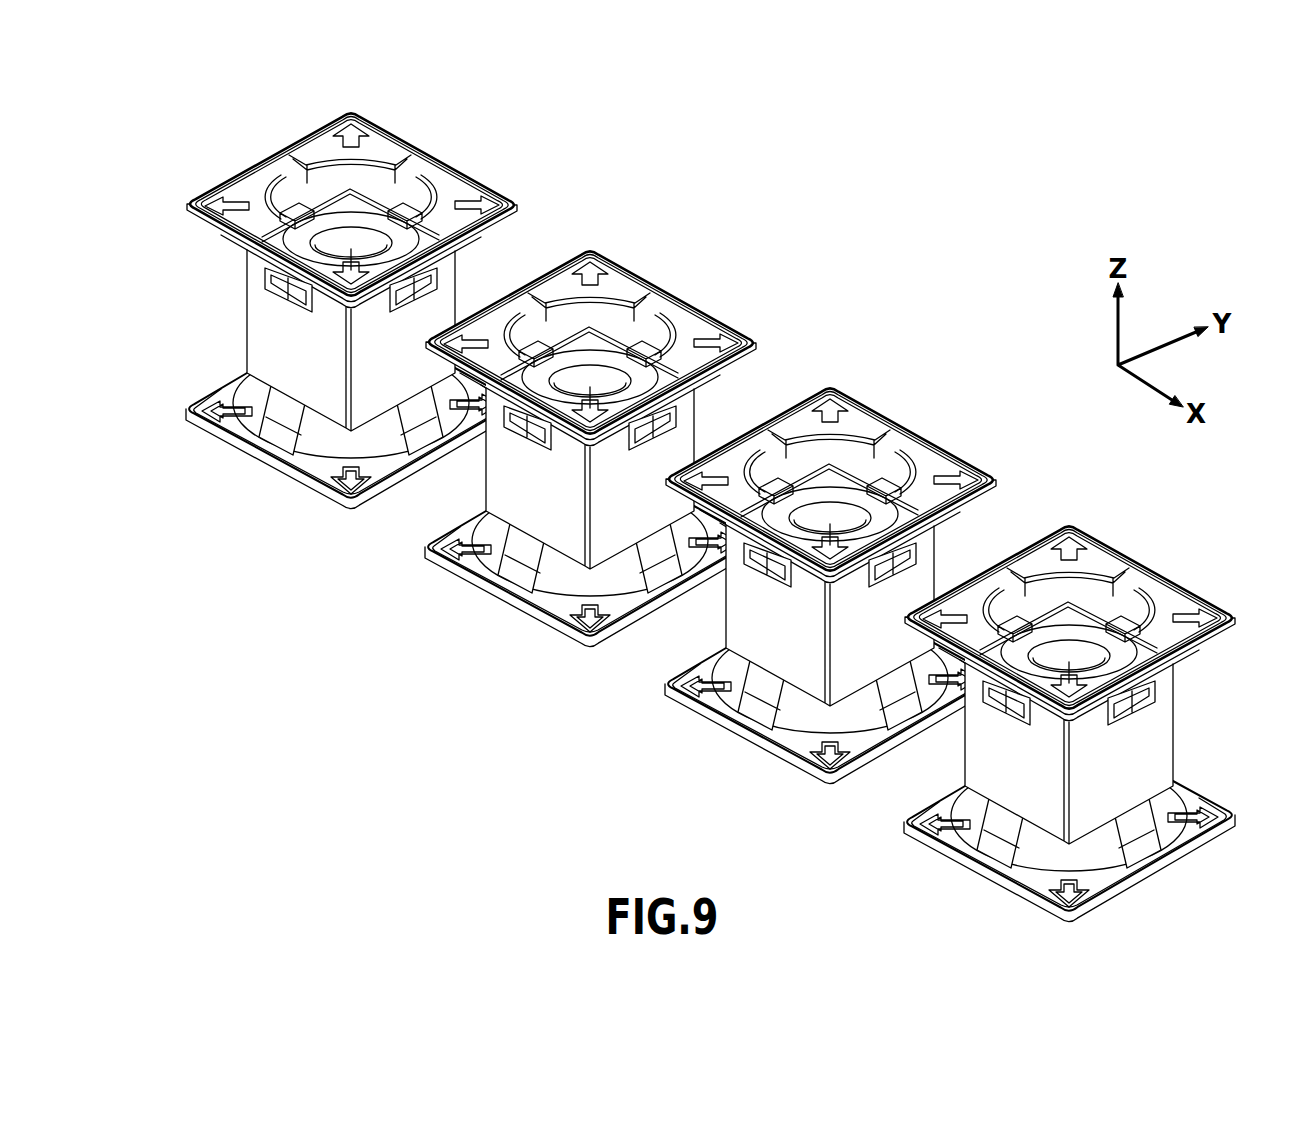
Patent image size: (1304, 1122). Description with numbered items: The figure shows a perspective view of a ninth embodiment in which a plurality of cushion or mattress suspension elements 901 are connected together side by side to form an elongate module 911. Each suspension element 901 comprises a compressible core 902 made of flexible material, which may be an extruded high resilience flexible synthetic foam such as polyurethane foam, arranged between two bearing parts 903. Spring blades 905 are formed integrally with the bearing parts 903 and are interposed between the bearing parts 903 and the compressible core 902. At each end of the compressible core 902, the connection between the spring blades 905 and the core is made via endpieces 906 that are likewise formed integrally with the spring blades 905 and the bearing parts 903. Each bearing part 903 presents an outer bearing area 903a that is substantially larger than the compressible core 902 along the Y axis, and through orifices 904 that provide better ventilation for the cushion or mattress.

The cushion or mattress suspension element 901 is at (435, 140).
The compressible core 902 is at (327, 400).
The bearing part 903 is at (450, 197).
The outer bearing area 903a is at (810, 422).
The through orifice 904 is at (359, 119).
The spring blade 905 is at (580, 285).
The endpiece 906 is at (653, 318).
The elongate module 911 is at (716, 491).